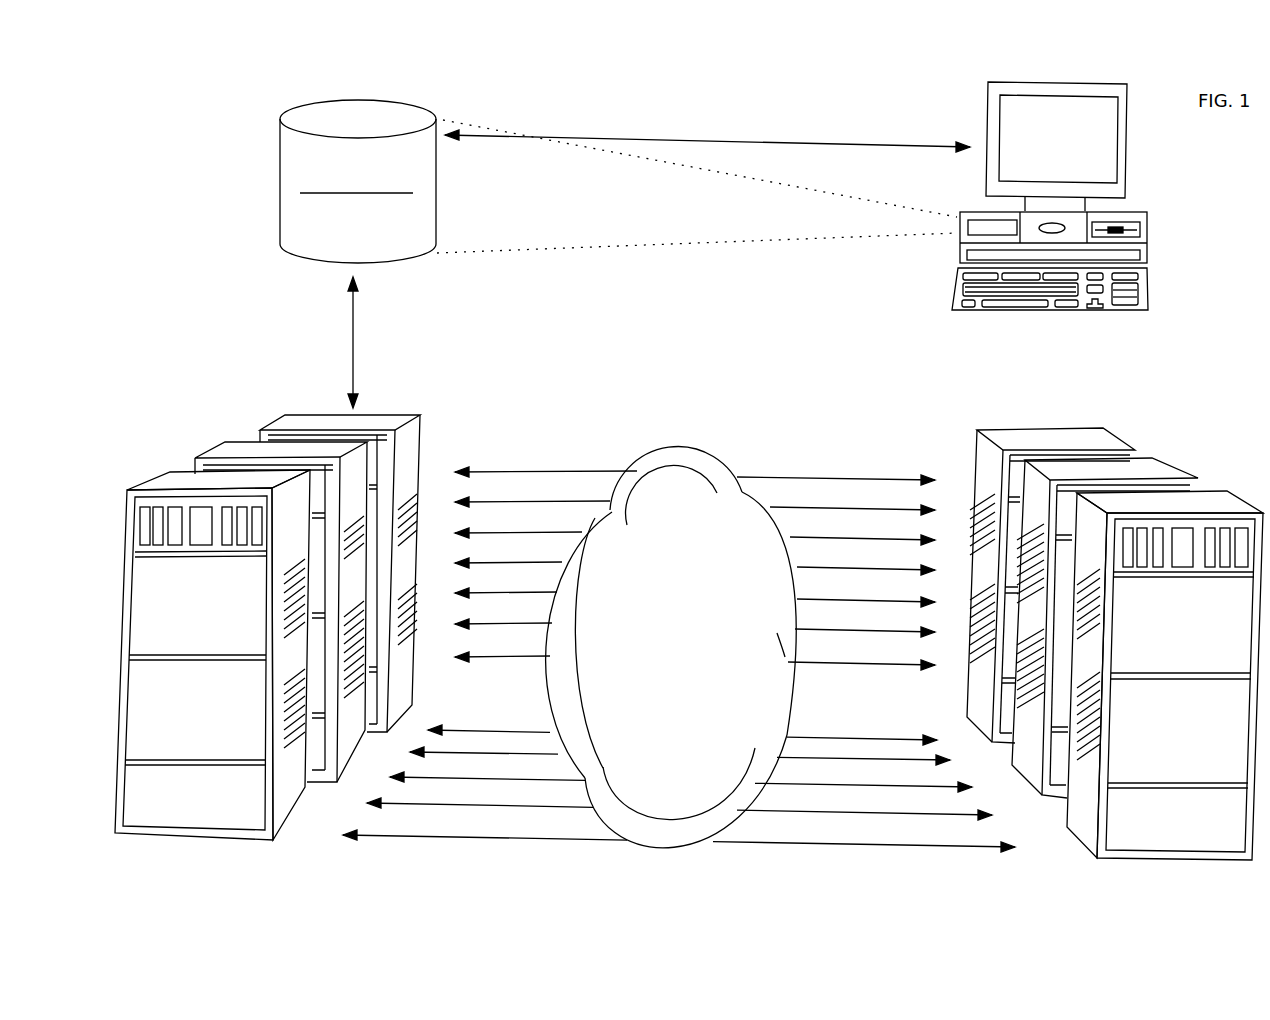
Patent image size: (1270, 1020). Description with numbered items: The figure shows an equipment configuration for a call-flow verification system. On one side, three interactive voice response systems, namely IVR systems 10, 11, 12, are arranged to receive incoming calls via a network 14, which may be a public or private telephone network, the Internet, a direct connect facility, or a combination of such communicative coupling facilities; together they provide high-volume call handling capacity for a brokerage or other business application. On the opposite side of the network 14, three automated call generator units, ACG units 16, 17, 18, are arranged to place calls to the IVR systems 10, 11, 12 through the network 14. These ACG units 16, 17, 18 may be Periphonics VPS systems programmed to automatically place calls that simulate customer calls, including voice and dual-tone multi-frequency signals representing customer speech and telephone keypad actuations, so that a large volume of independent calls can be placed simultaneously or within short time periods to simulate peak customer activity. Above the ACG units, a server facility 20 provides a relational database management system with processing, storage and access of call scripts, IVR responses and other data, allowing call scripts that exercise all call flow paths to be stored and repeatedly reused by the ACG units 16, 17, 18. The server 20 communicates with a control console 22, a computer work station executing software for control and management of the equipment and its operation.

The IVR system 10 is at (1220, 492).
The IVR system 11 is at (1158, 460).
The IVR system 12 is at (1097, 428).
The network 14 is at (698, 453).
The automated call generator (ACG) unit 16 is at (170, 470).
The automated call generator (ACG) unit 17 is at (236, 440).
The automated call generator (ACG) unit 18 is at (300, 412).
The server facility 20 is at (288, 108).
The control console 22 is at (1142, 213).